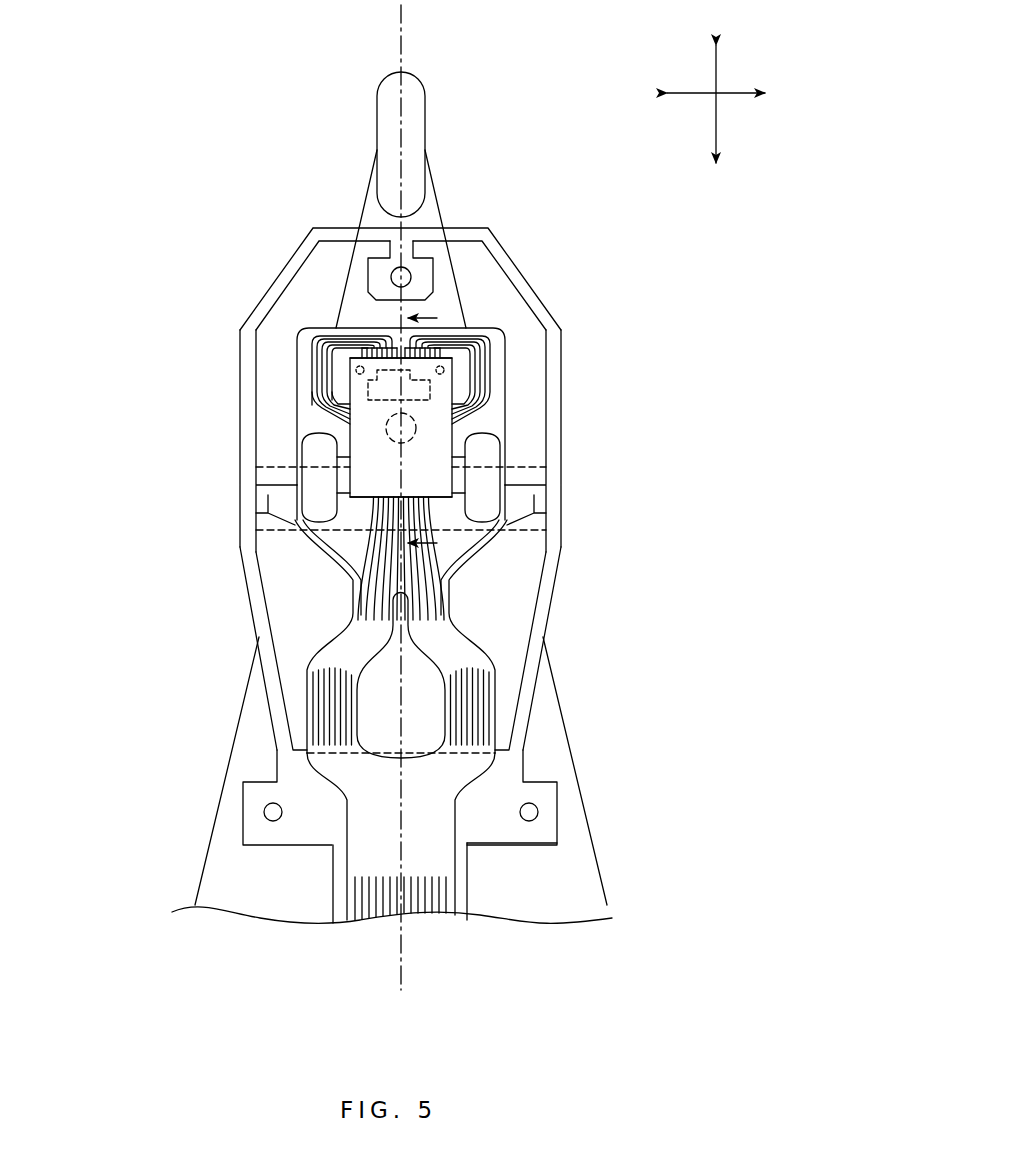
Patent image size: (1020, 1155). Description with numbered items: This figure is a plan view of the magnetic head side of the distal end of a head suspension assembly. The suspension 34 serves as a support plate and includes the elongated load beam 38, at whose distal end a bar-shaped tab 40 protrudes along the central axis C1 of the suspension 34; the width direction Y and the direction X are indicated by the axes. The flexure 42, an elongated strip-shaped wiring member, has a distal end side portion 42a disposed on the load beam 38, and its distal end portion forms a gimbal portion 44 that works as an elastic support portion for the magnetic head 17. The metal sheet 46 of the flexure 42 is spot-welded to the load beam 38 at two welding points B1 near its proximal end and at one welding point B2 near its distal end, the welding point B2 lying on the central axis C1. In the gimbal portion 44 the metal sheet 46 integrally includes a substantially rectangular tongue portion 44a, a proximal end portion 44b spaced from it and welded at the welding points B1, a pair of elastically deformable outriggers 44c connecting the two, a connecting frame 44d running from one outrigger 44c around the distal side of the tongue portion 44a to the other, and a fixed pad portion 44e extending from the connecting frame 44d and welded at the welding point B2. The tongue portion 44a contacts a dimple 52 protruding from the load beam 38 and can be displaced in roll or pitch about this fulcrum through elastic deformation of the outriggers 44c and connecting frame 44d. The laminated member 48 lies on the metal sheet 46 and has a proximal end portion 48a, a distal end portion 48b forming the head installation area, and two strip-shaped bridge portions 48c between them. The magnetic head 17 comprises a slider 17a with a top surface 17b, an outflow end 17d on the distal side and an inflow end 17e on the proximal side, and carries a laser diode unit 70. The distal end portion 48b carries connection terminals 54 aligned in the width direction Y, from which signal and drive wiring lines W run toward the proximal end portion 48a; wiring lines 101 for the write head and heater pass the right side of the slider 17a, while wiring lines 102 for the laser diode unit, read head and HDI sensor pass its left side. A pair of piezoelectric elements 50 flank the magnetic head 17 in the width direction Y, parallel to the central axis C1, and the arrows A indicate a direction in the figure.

The central axis C1 is at (405, 22).
The tab 40 is at (414, 105).
The gimbal portion 44 is at (145, 245).
The tongue portion 44a is at (507, 366).
The proximal end portion 44b is at (493, 778).
The outriggers 44c is at (255, 588).
The connecting frame 44d is at (257, 310).
The fixed pad portion 44e is at (420, 283).
The welding points B1 is at (262, 812).
The welding point B2 is at (409, 272).
The magnetic head 17 is at (455, 412).
The slider 17a is at (446, 377).
The top surface 17b is at (432, 466).
The outflow end 17d is at (422, 344).
The inflow end 17e is at (440, 497).
The wiring line 101 is at (494, 345).
The wiring line 102 is at (303, 358).
The connection terminals 54 is at (382, 341).
The laser diode unit 70 is at (345, 392).
The dimple 52 is at (392, 430).
The piezoelectric elements 50 is at (307, 497).
The wiring lines W is at (462, 404).
The direction A is at (433, 431).
The laminated member 48 is at (375, 853).
The proximal end portion 48a is at (368, 805).
The distal end portion 48b is at (307, 373).
The bridge portions 48c is at (330, 680).
The flexure 42 is at (428, 906).
The distal end side portion 42a is at (243, 755).
The suspension 34 is at (566, 690).
The metal sheet 46 is at (500, 830).
The load beam 38 is at (220, 870).
The X direction X is at (715, 122).
The width direction Y is at (731, 93).